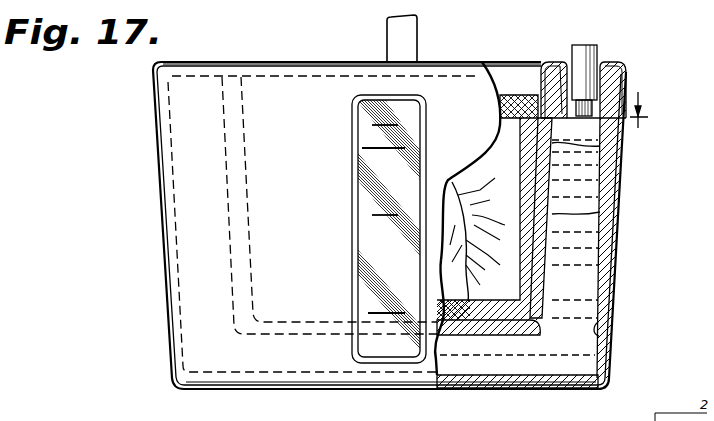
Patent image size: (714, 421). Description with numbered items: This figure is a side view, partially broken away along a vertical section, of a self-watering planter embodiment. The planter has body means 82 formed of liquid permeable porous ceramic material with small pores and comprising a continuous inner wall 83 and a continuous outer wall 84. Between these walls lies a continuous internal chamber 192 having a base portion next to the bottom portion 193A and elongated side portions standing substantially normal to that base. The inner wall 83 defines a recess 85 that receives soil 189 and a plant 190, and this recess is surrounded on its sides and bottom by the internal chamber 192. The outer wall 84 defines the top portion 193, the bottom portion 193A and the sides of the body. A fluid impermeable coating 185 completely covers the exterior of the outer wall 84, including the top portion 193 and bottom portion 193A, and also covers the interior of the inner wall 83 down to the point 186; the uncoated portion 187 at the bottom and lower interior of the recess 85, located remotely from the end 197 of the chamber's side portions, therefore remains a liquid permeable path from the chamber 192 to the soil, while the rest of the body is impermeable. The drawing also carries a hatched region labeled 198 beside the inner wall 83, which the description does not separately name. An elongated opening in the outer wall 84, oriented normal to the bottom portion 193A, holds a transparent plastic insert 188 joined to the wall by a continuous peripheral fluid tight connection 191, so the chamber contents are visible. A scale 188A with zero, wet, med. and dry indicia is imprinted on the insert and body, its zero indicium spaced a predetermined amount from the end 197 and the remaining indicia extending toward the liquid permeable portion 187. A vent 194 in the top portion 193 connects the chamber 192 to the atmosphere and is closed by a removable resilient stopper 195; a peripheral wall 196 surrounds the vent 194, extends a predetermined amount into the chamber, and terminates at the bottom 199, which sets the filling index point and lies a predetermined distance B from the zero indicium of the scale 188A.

The body means 82 is at (160, 250).
The inner wall 83 is at (520, 168).
The outer wall 84 is at (600, 314).
The recess 85 is at (243, 124).
The fluid impermeable coating 185 is at (598, 242).
The point 186 is at (600, 212).
The liquid permeable portion of the inner wall 187 is at (552, 282).
The transparent insert 188 is at (400, 186).
The scale 188A is at (314, 220).
The soil 189 is at (492, 76).
The plant 190 is at (387, 36).
The peripheral fluid tight connection 191 is at (440, 333).
The internal chamber 192 is at (599, 332).
The top portion 193 is at (605, 62).
The bottom portion 193A is at (495, 390).
The vent 194 is at (628, 104).
The removable resilient stopper 195 is at (584, 50).
The peripheral wall 196 is at (622, 90).
The end of the internal chamber 197 is at (500, 115).
The hatched pad 198 is at (505, 147).
The bottom of the vent wall 199 is at (603, 163).